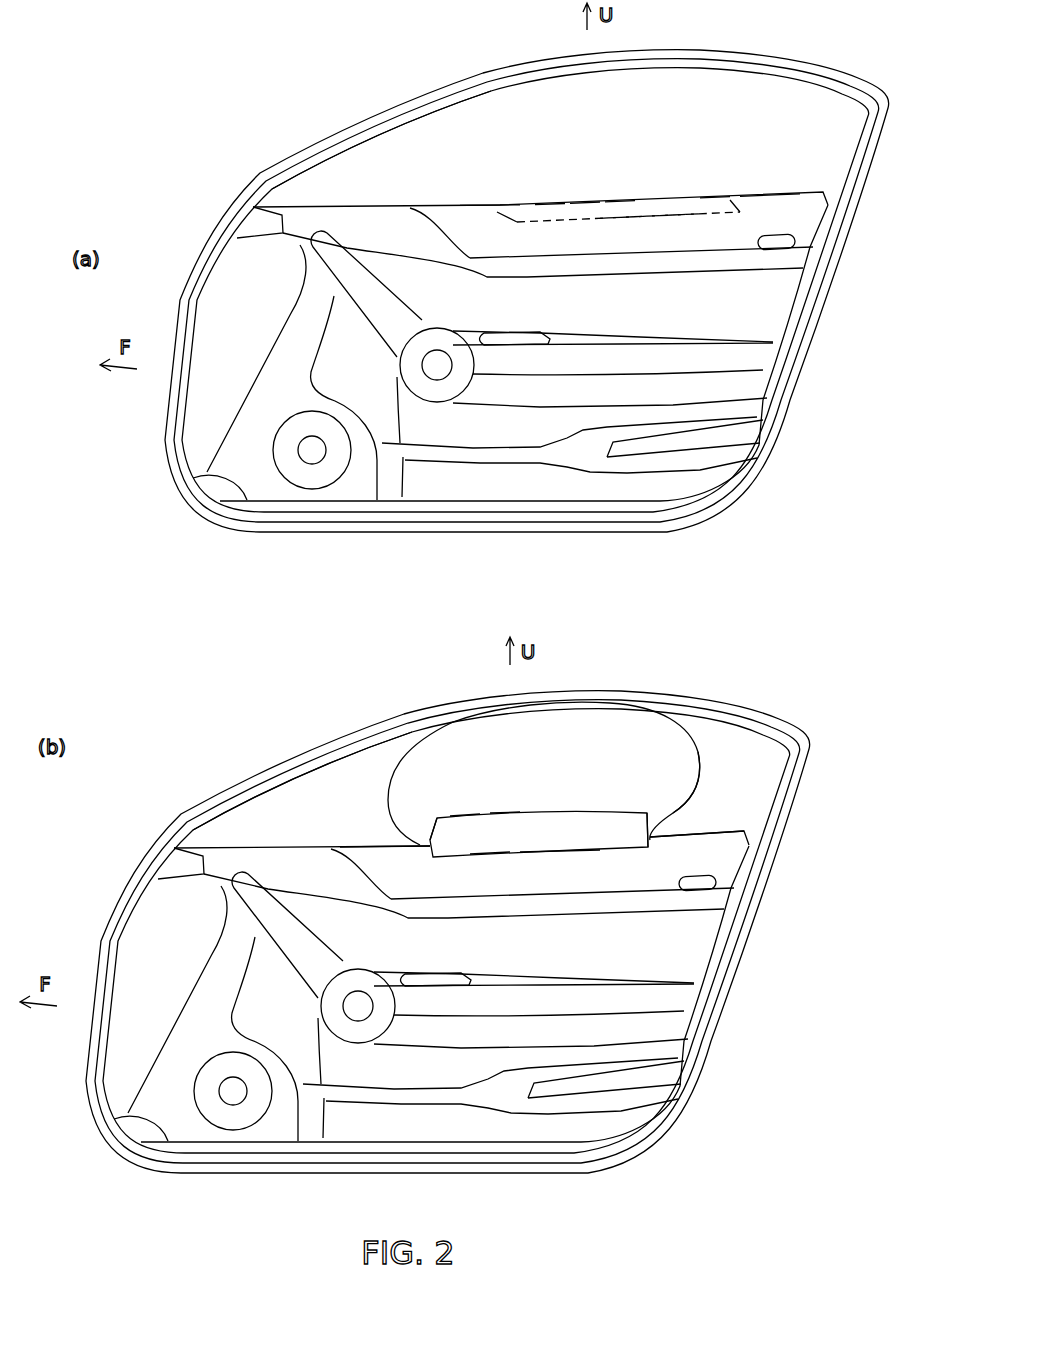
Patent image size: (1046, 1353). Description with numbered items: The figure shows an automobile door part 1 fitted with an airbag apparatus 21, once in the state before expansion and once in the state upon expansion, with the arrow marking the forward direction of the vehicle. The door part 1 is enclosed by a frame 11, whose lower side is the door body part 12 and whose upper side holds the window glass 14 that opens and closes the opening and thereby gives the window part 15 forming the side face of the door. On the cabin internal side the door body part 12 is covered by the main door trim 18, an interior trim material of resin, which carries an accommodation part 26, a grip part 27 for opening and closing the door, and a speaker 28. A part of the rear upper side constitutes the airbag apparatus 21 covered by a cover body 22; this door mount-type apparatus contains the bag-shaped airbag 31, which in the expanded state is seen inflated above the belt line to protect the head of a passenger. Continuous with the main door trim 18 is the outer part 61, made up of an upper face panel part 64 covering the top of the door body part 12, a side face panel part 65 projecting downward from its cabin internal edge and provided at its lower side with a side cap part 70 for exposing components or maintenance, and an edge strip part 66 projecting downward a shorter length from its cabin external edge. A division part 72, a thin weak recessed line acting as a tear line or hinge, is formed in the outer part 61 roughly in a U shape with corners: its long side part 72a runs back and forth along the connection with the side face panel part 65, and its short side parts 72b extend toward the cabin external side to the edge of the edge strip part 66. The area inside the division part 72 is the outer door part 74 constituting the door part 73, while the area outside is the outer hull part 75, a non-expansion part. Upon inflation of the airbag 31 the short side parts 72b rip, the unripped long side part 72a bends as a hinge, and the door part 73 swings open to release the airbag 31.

The door part 1 is at (165, 440).
The frame 11 is at (412, 102).
The door body part 12 is at (223, 288).
The window glass 14 is at (380, 147).
The window part 15 is at (337, 177).
The main door trim 18 is at (237, 262).
The airbag apparatus 21 is at (715, 203).
The cover body 22 is at (753, 198).
The accommodation part 26 is at (740, 447).
The grip part 27 is at (400, 313).
The speaker 28 is at (315, 418).
The airbag 31 is at (628, 732).
The outer part 61 is at (618, 212).
The upper face panel part 64 is at (483, 213).
The side face panel part 65 is at (693, 243).
The edge strip part 66 is at (545, 813).
The side cap part 70 is at (785, 243).
The division part 72 is at (662, 217).
The long side part 72a is at (628, 222).
The short side part 72b is at (507, 224).
The door part 73 is at (552, 212).
The outer door part 74 is at (585, 212).
The outer hull part 75 is at (450, 213).